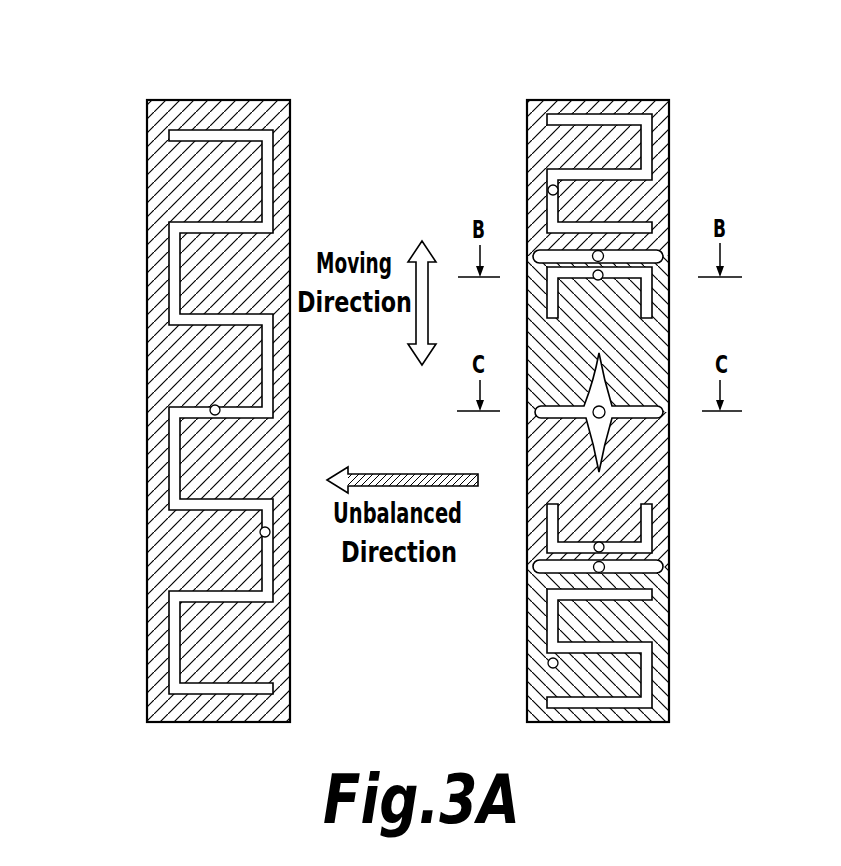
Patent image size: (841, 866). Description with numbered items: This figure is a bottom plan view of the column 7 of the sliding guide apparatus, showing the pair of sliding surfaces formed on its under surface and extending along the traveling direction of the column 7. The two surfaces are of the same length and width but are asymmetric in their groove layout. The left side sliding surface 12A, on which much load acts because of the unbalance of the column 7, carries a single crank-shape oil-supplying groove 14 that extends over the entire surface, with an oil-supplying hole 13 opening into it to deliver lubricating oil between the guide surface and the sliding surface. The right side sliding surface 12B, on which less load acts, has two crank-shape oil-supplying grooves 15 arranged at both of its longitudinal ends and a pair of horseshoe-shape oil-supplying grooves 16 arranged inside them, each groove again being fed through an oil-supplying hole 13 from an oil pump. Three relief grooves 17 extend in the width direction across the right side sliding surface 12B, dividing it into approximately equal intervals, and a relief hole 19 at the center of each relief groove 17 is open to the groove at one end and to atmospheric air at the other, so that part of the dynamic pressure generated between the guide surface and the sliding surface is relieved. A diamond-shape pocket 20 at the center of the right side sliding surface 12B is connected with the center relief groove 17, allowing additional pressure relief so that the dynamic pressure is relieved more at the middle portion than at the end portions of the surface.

The column 7 is at (155, 78).
The left side sliding surface 12A is at (176, 411).
The right side sliding surface 12B is at (658, 410).
The oil-supplying hole 13 is at (211, 407).
The oil-supplying groove 14 is at (172, 448).
The crank-shape oil-supplying groove 15 is at (645, 130).
The horseshoe-shape oil-supplying groove 16 is at (643, 293).
The relief groove 17 is at (658, 254).
The relief hole 19 is at (593, 256).
The diamond-shape pocket 20 is at (603, 433).